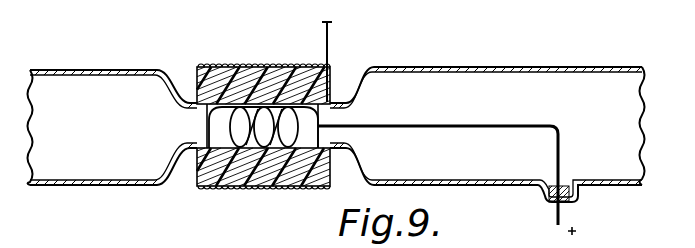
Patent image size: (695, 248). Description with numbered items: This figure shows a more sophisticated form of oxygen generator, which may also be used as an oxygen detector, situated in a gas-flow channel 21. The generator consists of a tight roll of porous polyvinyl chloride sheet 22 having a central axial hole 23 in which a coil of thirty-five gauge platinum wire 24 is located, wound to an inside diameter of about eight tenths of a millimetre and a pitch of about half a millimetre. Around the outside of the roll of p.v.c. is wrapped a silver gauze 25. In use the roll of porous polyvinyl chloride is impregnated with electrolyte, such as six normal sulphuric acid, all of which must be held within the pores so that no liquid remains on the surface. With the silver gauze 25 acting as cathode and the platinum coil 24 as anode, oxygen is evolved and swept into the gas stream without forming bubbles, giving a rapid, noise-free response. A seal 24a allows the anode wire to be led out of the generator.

The gas-flow channel 21 is at (559, 67).
The porous polyvinyl chloride sheet 22 is at (262, 170).
The central axial hole 23 is at (222, 135).
The platinum wire 24 is at (250, 67).
The seal 24a is at (548, 198).
The silver gauze 25 is at (223, 66).